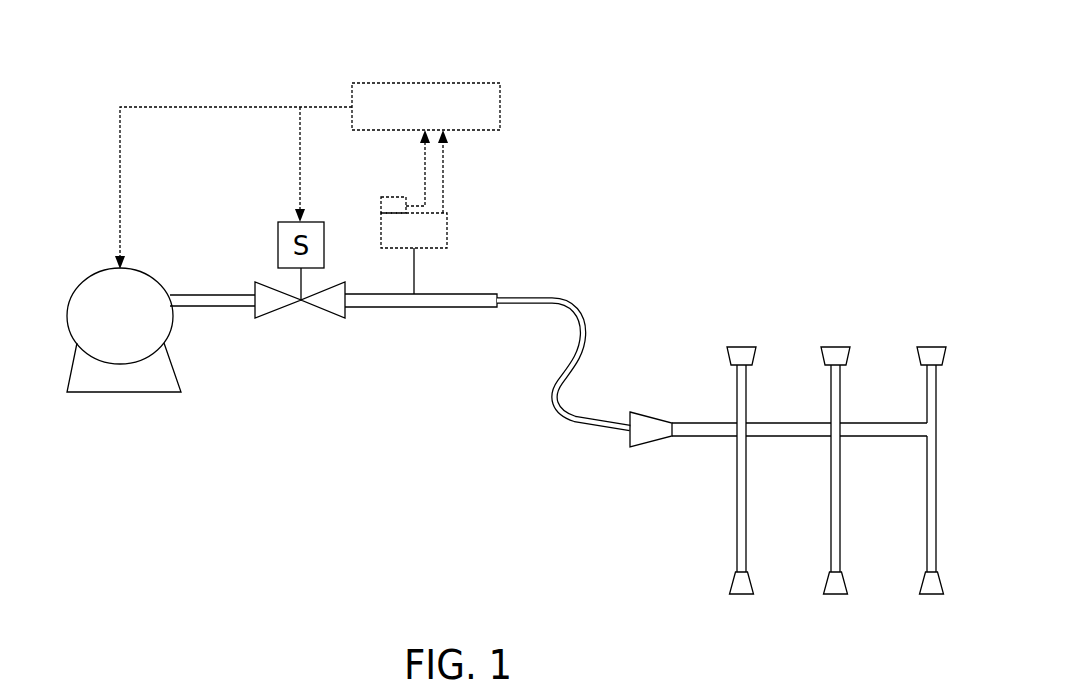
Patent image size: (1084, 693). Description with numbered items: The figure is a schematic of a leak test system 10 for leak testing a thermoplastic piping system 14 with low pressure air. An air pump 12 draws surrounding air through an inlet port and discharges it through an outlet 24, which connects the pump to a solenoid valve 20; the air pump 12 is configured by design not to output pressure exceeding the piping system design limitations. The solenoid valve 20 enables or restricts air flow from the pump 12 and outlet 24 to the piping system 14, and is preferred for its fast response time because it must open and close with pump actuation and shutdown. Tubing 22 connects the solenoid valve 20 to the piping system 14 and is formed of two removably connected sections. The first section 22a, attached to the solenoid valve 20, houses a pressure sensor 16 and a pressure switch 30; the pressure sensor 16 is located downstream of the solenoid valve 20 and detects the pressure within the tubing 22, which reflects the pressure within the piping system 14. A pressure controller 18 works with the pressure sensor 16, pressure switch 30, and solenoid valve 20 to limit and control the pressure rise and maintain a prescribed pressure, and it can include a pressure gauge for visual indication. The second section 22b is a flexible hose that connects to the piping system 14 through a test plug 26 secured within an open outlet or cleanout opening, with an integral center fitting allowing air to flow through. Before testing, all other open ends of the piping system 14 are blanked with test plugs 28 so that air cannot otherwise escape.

The leak test system 10 is at (666, 67).
The air pump 12 is at (99, 271).
The piping system 14 is at (958, 67).
The pressure sensor 16 is at (447, 232).
The pressure controller 18 is at (500, 105).
The solenoid valve 20 is at (302, 304).
The tubing 22 is at (487, 359).
The first section of the tubing 22a is at (461, 310).
The second section of the tubing 22b is at (569, 416).
The outlet 24 is at (206, 309).
The test plug 26 is at (650, 413).
The test plugs 28 is at (840, 346).
The pressure switch 30 is at (381, 203).